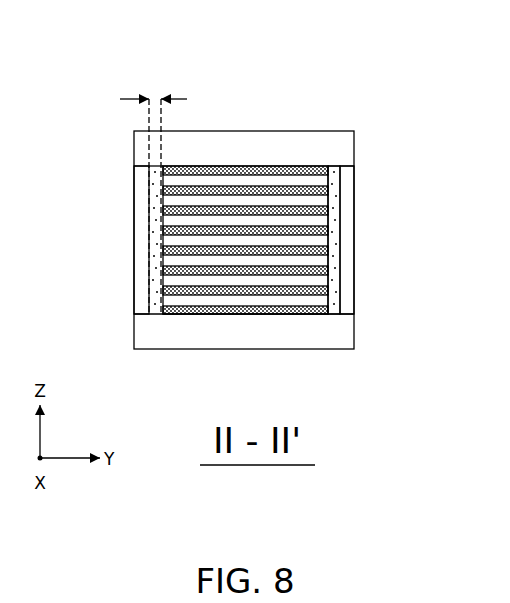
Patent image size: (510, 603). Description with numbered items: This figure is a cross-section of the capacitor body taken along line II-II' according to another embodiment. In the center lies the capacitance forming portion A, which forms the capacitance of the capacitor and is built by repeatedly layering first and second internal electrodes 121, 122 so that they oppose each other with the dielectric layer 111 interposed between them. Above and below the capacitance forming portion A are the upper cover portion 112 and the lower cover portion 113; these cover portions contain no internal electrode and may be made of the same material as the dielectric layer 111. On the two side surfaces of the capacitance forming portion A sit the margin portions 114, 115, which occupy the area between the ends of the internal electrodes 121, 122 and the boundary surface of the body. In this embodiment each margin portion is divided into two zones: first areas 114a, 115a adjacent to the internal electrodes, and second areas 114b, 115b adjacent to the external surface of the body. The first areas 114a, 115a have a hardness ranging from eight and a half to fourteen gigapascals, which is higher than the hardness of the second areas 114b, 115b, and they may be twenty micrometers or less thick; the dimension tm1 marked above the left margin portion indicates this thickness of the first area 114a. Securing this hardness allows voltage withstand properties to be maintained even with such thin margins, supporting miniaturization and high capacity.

The upper cover portion 112 is at (243, 152).
The lower cover portion 113 is at (257, 349).
The dielectric layer 111 is at (329, 178).
The first internal electrode 121 is at (329, 166).
The second internal electrode 122 is at (331, 189).
The margin portion 114 is at (84, 206).
The first area 114a is at (156, 227).
The second area 114b is at (142, 267).
The margin portion 115 is at (405, 240).
The first area 115a is at (332, 225).
The second area 115b is at (347, 264).
The capacitance forming portion A is at (155, 201).
The thickness of first electrode layer tm1 is at (155, 99).